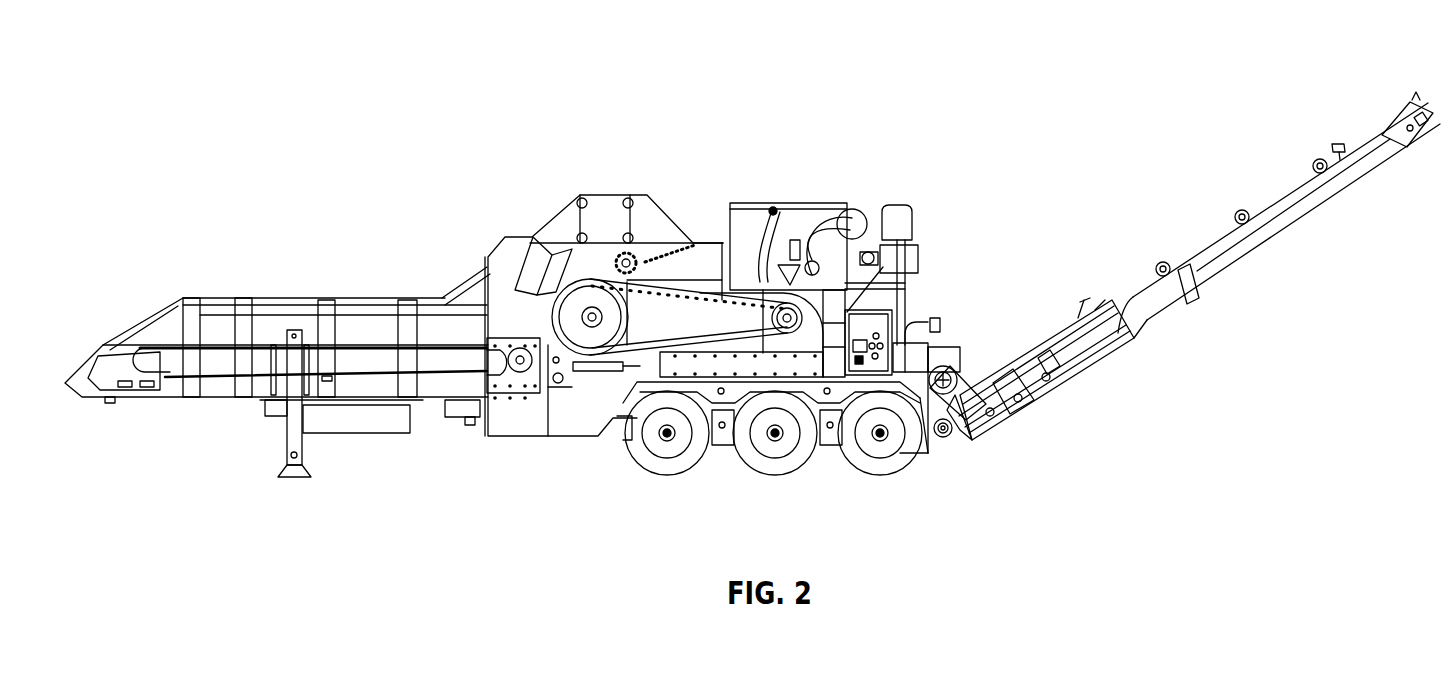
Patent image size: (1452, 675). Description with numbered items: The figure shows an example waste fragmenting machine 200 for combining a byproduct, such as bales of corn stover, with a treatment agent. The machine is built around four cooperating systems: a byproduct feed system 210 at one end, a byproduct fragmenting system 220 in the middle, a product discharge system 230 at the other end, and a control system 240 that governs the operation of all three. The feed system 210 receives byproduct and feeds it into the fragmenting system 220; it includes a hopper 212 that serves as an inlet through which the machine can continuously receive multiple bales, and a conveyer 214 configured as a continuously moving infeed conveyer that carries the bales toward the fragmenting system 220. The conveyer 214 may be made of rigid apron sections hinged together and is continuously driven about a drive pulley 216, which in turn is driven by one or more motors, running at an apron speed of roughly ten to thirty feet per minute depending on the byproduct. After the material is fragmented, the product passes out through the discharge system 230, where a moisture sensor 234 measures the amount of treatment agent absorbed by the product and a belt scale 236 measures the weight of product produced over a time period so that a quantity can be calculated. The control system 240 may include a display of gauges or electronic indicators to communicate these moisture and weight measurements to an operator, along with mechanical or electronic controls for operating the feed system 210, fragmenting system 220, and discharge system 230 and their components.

The waste fragmenting machine 200 is at (947, 74).
The byproduct feed system 210 is at (300, 298).
The hopper 212 is at (222, 298).
The conveyer 214 is at (218, 383).
The drive pulley 216 is at (520, 357).
The byproduct fragmenting system 220 is at (665, 208).
The product discharge system 230 is at (1052, 327).
The moisture sensor 234 is at (950, 436).
The belt scale 236 is at (1128, 303).
The control system 240 is at (890, 312).